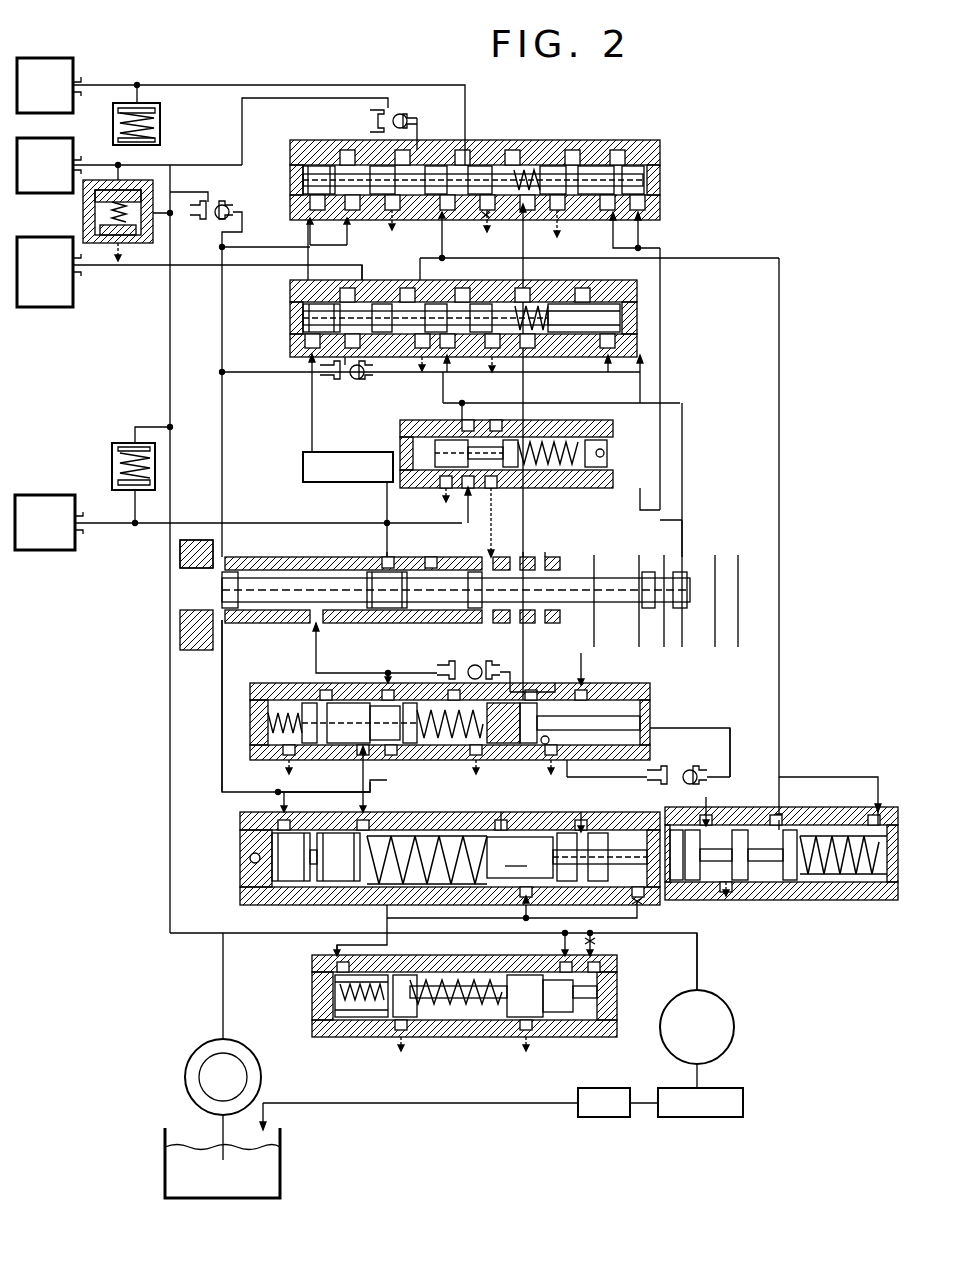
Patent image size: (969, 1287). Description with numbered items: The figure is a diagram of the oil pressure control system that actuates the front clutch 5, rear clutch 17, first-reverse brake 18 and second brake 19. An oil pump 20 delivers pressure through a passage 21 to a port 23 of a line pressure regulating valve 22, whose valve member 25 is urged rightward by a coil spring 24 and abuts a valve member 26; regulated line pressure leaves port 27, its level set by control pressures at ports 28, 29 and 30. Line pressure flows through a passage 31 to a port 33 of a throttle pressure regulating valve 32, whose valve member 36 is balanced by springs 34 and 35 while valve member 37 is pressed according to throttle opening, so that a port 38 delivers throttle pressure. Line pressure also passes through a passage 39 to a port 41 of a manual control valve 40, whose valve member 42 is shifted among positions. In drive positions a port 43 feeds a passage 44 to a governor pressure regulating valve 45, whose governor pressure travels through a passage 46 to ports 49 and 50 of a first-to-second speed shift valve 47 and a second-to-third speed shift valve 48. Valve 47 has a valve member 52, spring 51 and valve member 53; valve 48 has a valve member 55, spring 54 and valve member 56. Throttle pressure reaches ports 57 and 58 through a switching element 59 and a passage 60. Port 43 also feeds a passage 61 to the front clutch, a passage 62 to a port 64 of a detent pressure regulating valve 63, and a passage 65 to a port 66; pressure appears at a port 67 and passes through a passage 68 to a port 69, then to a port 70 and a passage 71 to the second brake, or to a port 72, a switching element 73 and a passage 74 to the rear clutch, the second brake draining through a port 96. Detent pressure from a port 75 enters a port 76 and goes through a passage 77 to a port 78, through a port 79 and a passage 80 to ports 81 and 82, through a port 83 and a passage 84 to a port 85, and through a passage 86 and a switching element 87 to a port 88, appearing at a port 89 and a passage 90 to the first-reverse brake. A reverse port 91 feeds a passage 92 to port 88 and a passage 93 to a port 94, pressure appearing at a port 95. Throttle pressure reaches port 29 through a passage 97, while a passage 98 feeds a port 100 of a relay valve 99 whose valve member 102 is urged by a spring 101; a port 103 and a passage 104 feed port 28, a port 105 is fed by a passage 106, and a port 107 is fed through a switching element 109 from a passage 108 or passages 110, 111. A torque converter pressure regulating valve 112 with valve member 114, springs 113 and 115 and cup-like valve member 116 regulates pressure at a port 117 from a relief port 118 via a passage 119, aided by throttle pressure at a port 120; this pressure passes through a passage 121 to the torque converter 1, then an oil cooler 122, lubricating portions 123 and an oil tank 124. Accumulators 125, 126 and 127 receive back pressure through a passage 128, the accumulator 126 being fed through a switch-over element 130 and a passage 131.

The torque converter 1 is at (734, 1028).
The front clutch 5 is at (44, 552).
The rear clutch 17 is at (50, 136).
The first-reverse brake 18 is at (50, 310).
The second brake 19 is at (42, 58).
The oil pump 20 is at (186, 1062).
The passage 21 is at (223, 1010).
The line pressure regulating valve 22 is at (240, 886).
The port 23 is at (518, 902).
The coil spring 24 is at (440, 900).
The valve member 25 is at (567, 857).
The valve member 26 is at (332, 896).
The port 27 is at (515, 829).
The port 28 is at (600, 828).
The port 29 is at (316, 803).
The port 30 is at (242, 812).
The passage 31 is at (446, 804).
The throttle pressure regulating valve 32 is at (250, 700).
The port 33 is at (358, 760).
The compression coil spring 34 is at (528, 742).
The compression coil spring 35 is at (272, 756).
The valve member 36 is at (323, 700).
The valve member 37 is at (546, 760).
The port 38 is at (374, 683).
The passage 39 is at (327, 648).
The manual control valve 40 is at (278, 623).
The port 41 is at (310, 624).
The valve member 42 is at (404, 557).
The port 43 is at (382, 554).
The passage 44 is at (380, 502).
The governor pressure regulating valve 45 is at (304, 464).
The passage 46 is at (312, 434).
The 1-2 speed shift valve 47 is at (296, 324).
The 2-3 speed shift valve 48 is at (300, 190).
The port 49 is at (294, 356).
The port 50 is at (300, 225).
The compression coil spring 51 is at (538, 302).
The valve member 52 is at (396, 290).
The valve member 53 is at (576, 300).
The compression coil spring 54 is at (528, 148).
The valve member 55 is at (342, 152).
The valve member 56 is at (595, 148).
The port 57 is at (535, 372).
The port 58 is at (555, 226).
The switching element 59 is at (448, 652).
The passage 60 is at (512, 388).
The passage 61 is at (280, 520).
The passage 62 is at (440, 506).
The detent pressure regulating valve 63 is at (422, 438).
The port 64 is at (468, 505).
The passage 65 is at (440, 400).
The port 66 is at (448, 362).
The port 67 is at (420, 290).
The passage 68 is at (442, 251).
The port 69 is at (436, 225).
The port 70 is at (474, 146).
The passage 71 is at (342, 85).
The port 72 is at (422, 150).
The switching element 73 is at (402, 116).
The passage 74 is at (242, 126).
The port 75 is at (542, 498).
The port 76 is at (484, 554).
The passage 77 is at (536, 667).
The port 78 is at (580, 682).
The port 79 is at (543, 552).
The passage 80 is at (561, 503).
The port 81 is at (644, 214).
The port 82 is at (614, 224).
The port 83 is at (584, 558).
The passage 84 is at (620, 551).
The port 85 is at (616, 377).
The passage 86 is at (424, 378).
The switching element 87 is at (360, 382).
The port 88 is at (312, 380).
The port 89 is at (368, 278).
The passage 90 is at (211, 260).
The reverse port 91 is at (216, 555).
The passage 92 is at (260, 380).
The passage 93 is at (165, 352).
The port 94 is at (314, 231).
The port 95 is at (362, 148).
The port 96 is at (490, 231).
The passage 97 is at (322, 782).
The passage 98 is at (600, 774).
The relay valve 99 is at (755, 908).
The port 100 is at (816, 812).
The spring 101 is at (812, 881).
The valve member 102 is at (720, 881).
The port 103 is at (768, 812).
The passage 104 is at (786, 732).
The port 105 is at (876, 806).
The passage 106 is at (779, 370).
The port 107 is at (690, 812).
The passage 108 is at (682, 526).
The switching element 109 is at (662, 752).
The passage 110 is at (213, 752).
The passage 111 is at (648, 755).
The torque converter pressure regulating valve 112 is at (315, 1012).
The compression coil spring 113 is at (466, 1018).
The valve member 114 is at (544, 1020).
The compression coil spring 115 is at (398, 1020).
The cup-like valve member 116 is at (336, 1020).
The port 117 is at (557, 950).
The relief port 118 is at (567, 902).
The passage 119 is at (614, 943).
The port 120 is at (330, 966).
The passage 121 is at (697, 963).
The oil cooler 122 is at (705, 1118).
The lubricating portions 123 is at (607, 1118).
The oil tank 124 is at (280, 1160).
The accumulator 125 is at (112, 452).
The accumulator 126 is at (85, 204).
The accumulator 127 is at (118, 133).
The passage 128 is at (170, 790).
The switch-over element 130 is at (220, 204).
The passage 131 is at (189, 190).